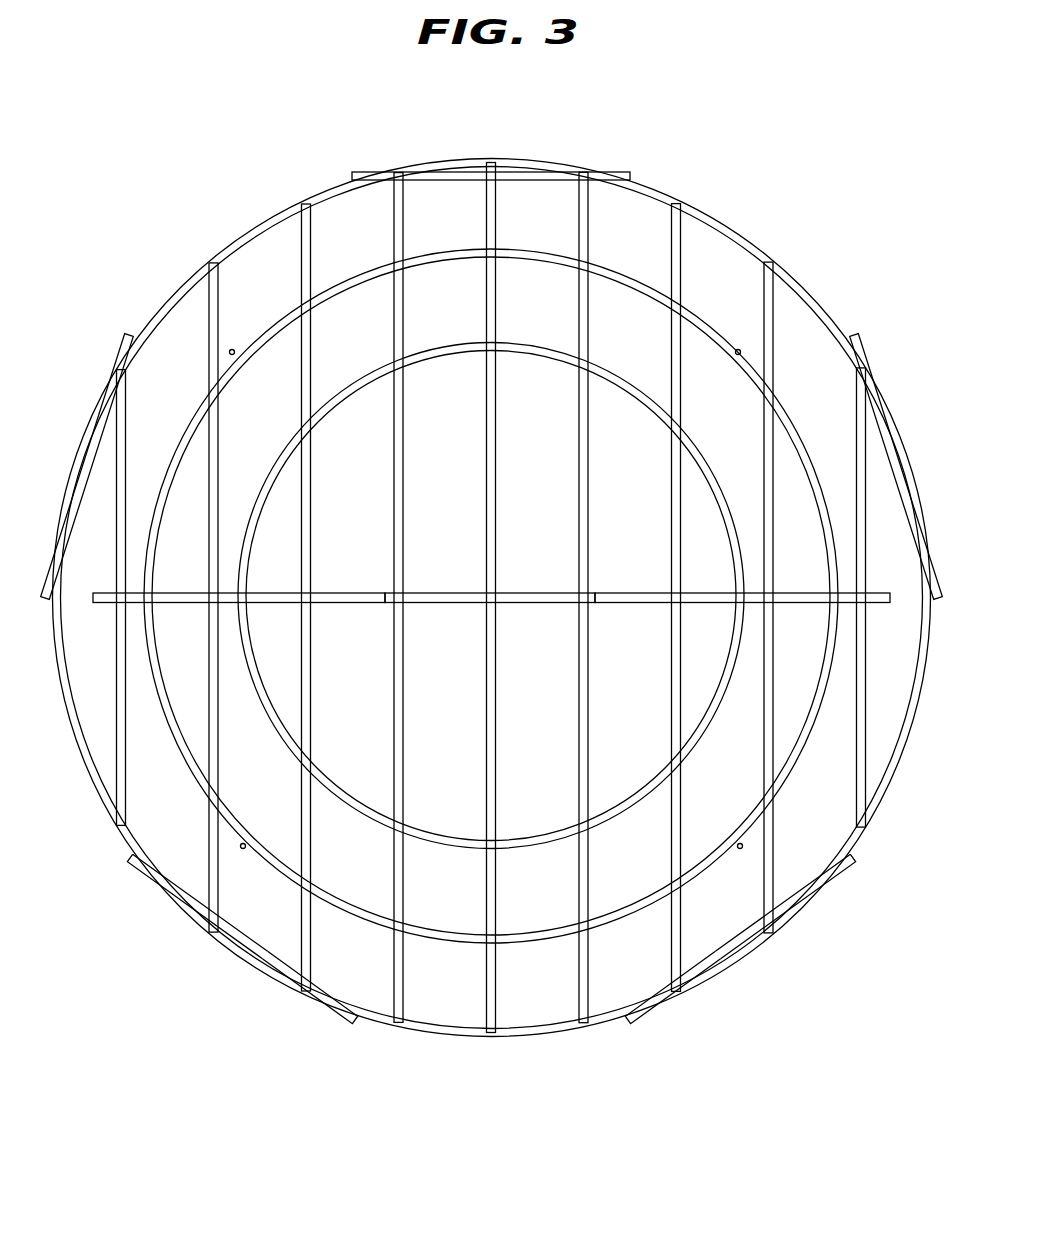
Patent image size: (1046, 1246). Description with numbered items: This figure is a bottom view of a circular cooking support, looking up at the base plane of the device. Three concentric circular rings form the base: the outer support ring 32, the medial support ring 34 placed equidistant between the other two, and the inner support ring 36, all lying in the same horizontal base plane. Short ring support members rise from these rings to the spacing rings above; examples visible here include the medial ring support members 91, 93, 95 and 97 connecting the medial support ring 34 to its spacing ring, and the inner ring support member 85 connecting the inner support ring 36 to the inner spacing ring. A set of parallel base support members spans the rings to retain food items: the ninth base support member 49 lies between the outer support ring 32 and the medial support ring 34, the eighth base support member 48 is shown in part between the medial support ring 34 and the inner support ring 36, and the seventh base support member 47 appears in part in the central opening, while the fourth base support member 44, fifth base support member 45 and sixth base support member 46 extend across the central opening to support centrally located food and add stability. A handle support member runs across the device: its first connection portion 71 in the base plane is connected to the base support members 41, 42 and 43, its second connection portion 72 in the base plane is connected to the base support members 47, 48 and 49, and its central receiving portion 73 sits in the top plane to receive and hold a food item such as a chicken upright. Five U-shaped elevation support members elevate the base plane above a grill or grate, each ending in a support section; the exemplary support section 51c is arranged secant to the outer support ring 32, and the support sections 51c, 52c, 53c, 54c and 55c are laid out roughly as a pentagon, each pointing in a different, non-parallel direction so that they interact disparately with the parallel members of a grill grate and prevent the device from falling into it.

The outer support ring 32 is at (450, 1028).
The medial support ring 34 is at (317, 990).
The inner support ring 36 is at (605, 817).
The base support member 41 is at (866, 423).
The base support member 42 is at (774, 324).
The base support member 43 is at (682, 259).
The fourth base support member 44 is at (589, 213).
The fifth base support member 45 is at (485, 208).
The sixth base support member 46 is at (393, 215).
The seventh base support member 47 is at (300, 260).
The eighth base support member 48 is at (208, 340).
The ninth base support member 49 is at (114, 438).
The support section 51c is at (740, 934).
The support section 52c is at (270, 953).
The support section 53c is at (88, 480).
The support section 54c is at (522, 180).
The support section 55c is at (872, 476).
The first connection portion 71 is at (618, 592).
The second connection portion 72 is at (342, 592).
The central receiving portion 73 is at (524, 592).
The inner ring support member 85 is at (678, 766).
The medial ring support member 91 is at (736, 349).
The medial ring support member 93 is at (232, 349).
The medial ring support member 95 is at (240, 845).
The medial ring support member 97 is at (743, 845).